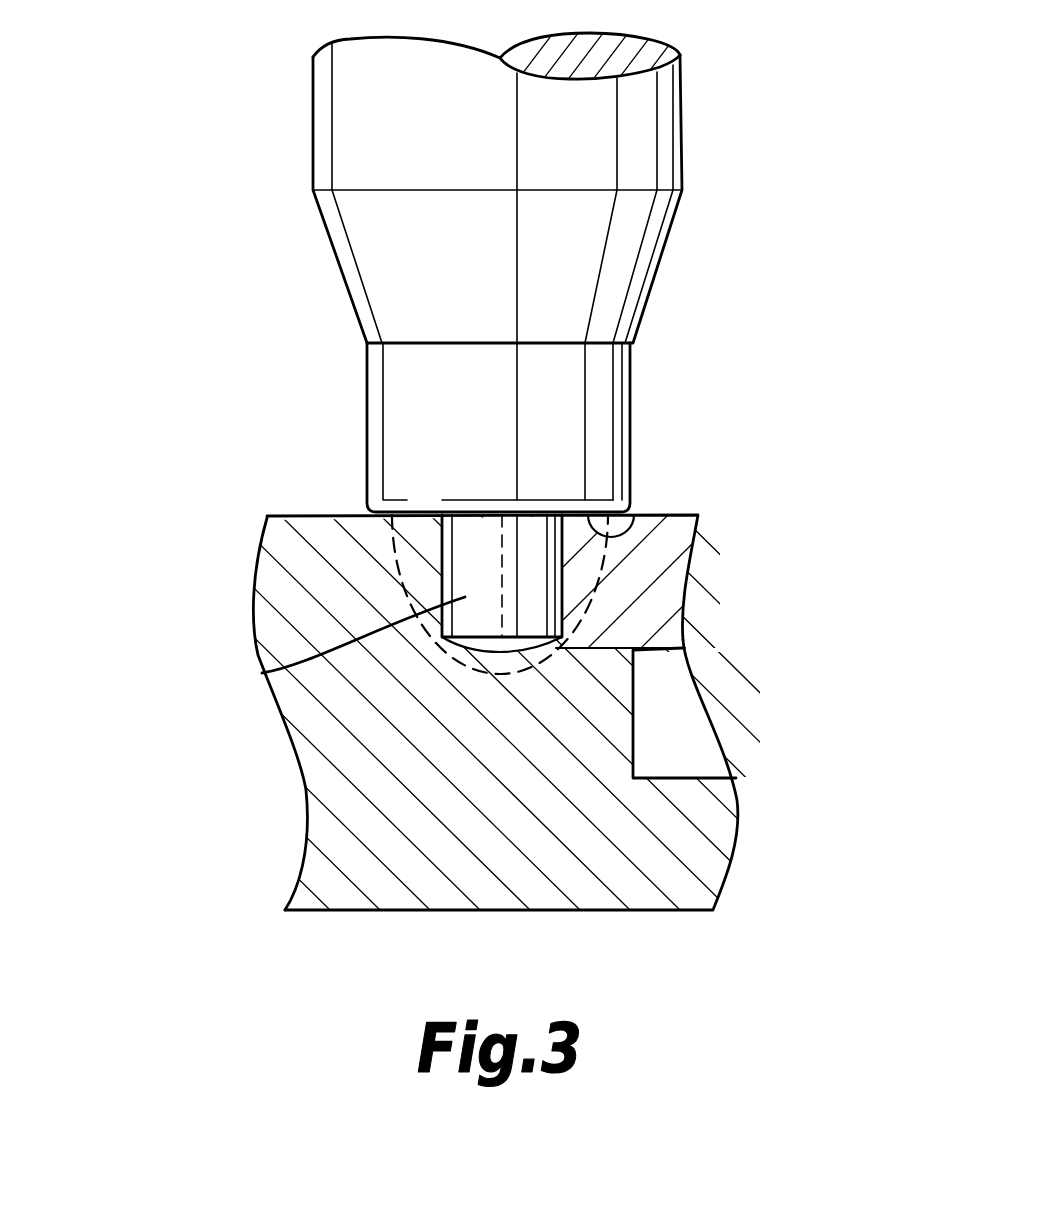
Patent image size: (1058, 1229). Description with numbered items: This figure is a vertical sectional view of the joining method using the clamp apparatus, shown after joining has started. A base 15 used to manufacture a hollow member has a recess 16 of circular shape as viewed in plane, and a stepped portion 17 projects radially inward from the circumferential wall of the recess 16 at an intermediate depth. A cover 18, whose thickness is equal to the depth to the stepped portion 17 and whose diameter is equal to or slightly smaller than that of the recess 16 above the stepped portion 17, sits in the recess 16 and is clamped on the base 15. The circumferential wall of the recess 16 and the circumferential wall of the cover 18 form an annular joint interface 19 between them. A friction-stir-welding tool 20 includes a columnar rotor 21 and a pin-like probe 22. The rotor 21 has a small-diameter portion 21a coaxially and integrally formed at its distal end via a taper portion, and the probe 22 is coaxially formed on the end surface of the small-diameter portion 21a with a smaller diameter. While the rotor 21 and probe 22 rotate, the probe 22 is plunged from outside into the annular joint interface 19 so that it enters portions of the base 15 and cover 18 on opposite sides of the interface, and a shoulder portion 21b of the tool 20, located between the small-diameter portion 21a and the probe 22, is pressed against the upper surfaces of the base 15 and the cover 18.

The base 15 is at (529, 692).
The recess 16 is at (695, 777).
The stepped portion 17 is at (580, 645).
The cover 18 is at (700, 546).
The annular joint interface 19 is at (502, 550).
The friction-stir-welding tool 20 is at (431, 328).
The columnar rotor 21 is at (638, 104).
The small-diameter portion 21a is at (432, 403).
The shoulder portion 21b is at (611, 560).
The probe 22 is at (307, 646).